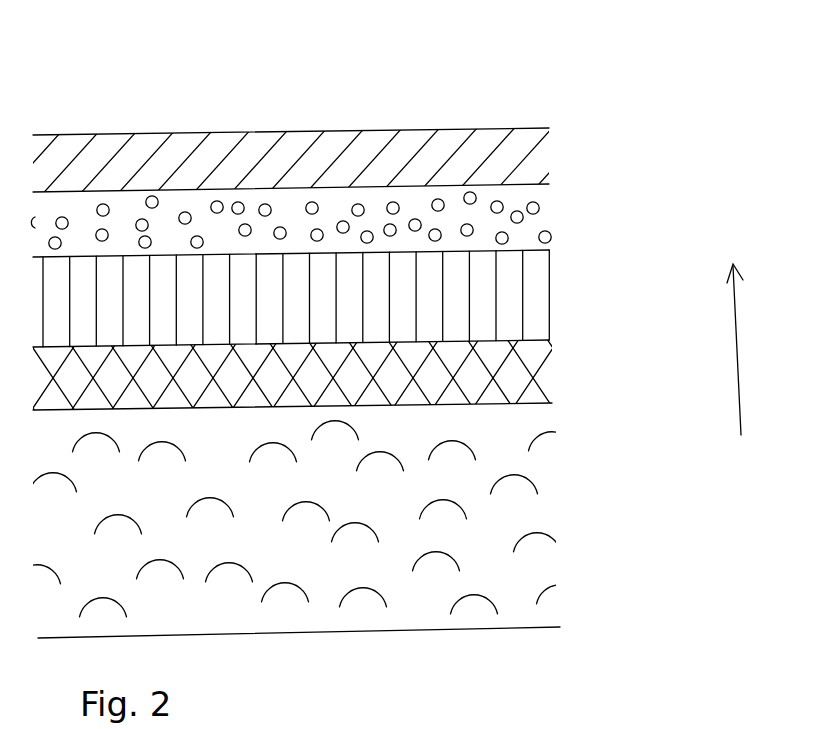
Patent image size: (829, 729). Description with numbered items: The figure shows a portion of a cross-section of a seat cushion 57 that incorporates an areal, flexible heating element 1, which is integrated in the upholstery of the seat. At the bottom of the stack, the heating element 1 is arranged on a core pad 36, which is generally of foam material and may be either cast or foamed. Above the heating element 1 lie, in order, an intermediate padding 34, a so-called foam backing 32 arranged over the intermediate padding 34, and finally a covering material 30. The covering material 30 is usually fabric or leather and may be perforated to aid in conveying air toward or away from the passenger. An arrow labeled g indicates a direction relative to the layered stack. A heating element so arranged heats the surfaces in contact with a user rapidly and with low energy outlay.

The seat cushion 57 is at (492, 82).
The covering material 30 is at (537, 158).
The foam backing 32 is at (542, 221).
The intermediate padding 34 is at (533, 298).
The heating element 1 is at (543, 372).
The core pad 36 is at (537, 489).
The direction of gravity g is at (736, 331).